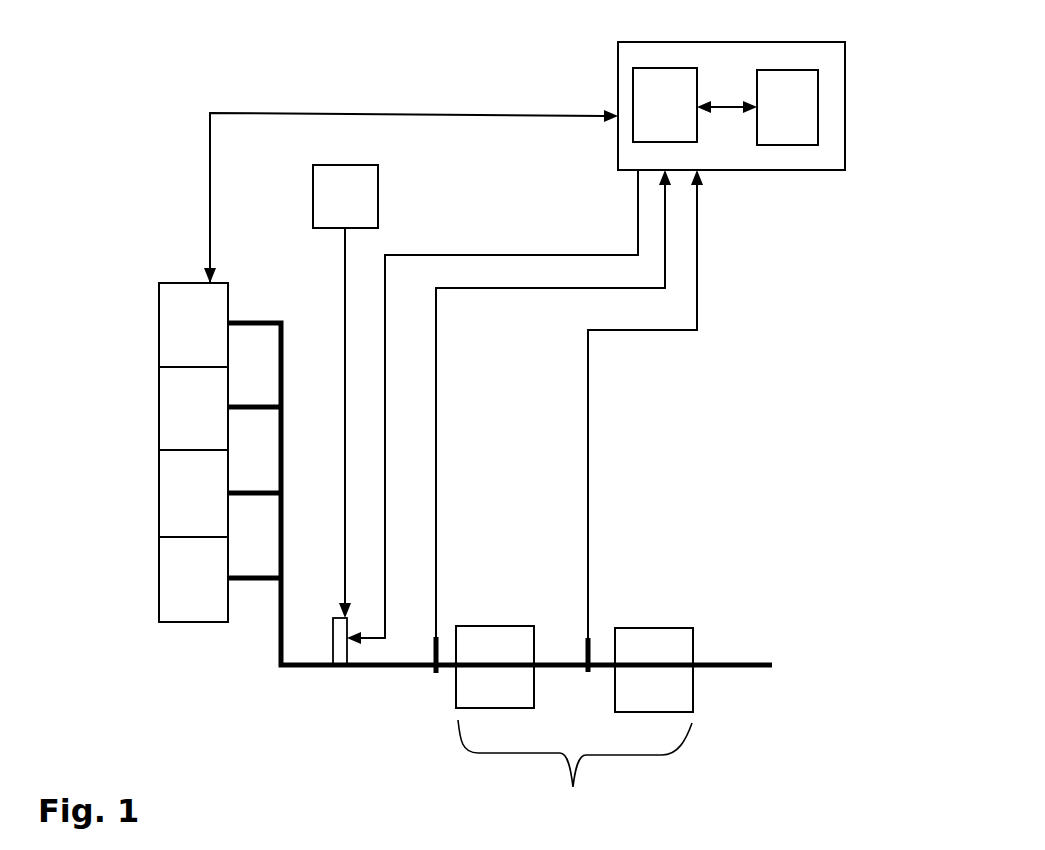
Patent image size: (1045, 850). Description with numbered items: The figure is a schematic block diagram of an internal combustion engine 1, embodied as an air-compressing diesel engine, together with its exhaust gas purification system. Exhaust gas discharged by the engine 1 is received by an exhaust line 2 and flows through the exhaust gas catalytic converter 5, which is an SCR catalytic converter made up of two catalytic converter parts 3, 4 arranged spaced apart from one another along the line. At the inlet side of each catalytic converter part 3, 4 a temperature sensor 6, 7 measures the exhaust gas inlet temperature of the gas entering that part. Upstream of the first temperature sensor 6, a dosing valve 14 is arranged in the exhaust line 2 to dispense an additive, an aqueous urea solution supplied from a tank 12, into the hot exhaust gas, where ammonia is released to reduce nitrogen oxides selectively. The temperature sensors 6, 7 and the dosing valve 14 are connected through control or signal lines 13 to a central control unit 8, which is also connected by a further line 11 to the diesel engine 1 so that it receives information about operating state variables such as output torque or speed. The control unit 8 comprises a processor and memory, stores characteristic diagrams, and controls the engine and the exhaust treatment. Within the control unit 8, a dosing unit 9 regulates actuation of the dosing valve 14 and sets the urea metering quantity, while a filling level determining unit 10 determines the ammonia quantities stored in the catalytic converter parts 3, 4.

The internal combustion engine 1 is at (175, 312).
The exhaust line 2 is at (275, 612).
The catalytic converter part 3 is at (495, 667).
The catalytic converter part 4 is at (654, 670).
The exhaust gas catalytic converter 5 is at (575, 779).
The temperature sensor 6 is at (433, 647).
The temperature sensor 7 is at (585, 647).
The control unit 8 is at (818, 172).
The dosing unit 9 is at (665, 105).
The filling level determining unit 10 is at (787, 107).
The further line 11 is at (229, 108).
The tank 12 is at (360, 177).
The control or signal lines 13 is at (690, 207).
The dosing valve 14 is at (333, 642).